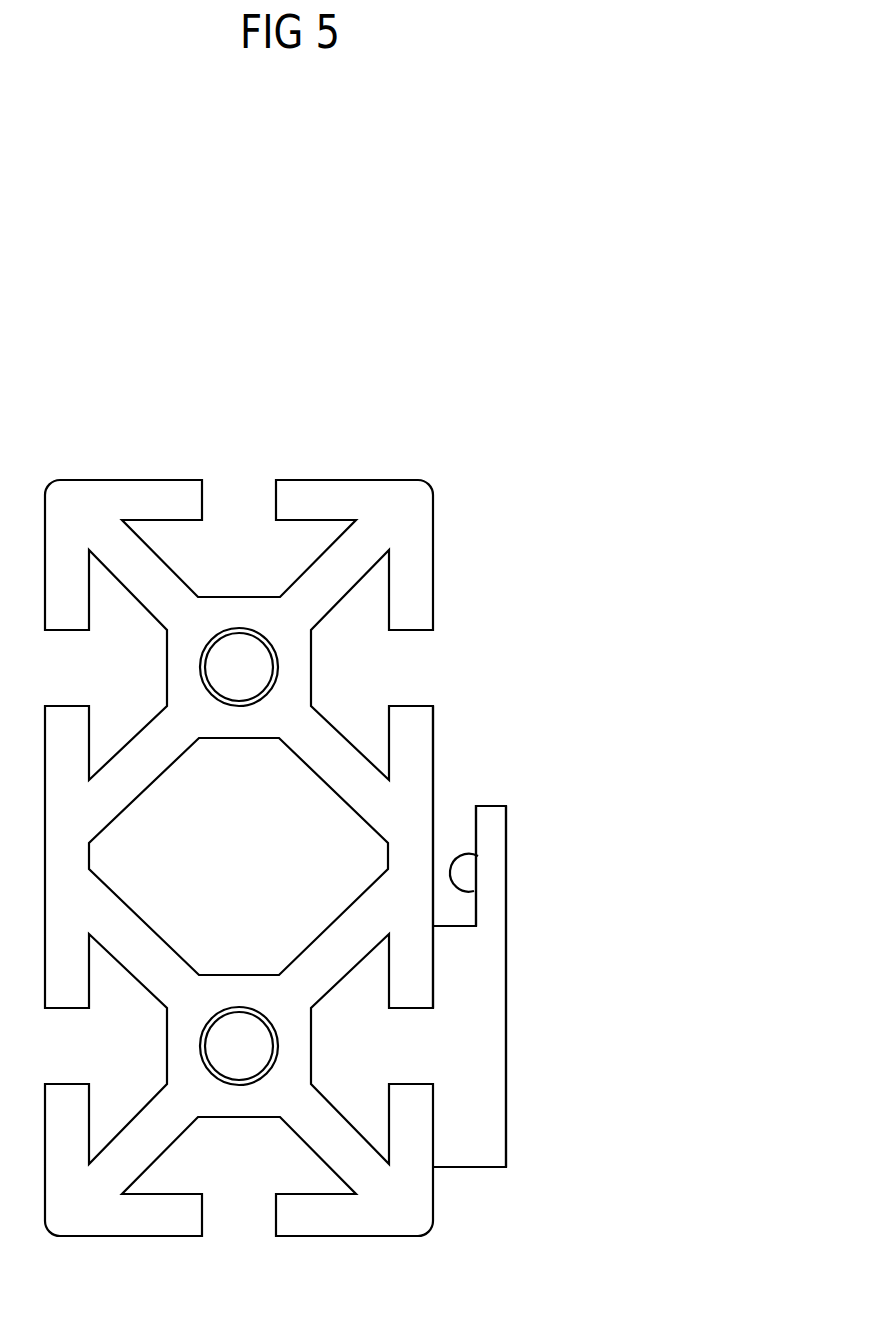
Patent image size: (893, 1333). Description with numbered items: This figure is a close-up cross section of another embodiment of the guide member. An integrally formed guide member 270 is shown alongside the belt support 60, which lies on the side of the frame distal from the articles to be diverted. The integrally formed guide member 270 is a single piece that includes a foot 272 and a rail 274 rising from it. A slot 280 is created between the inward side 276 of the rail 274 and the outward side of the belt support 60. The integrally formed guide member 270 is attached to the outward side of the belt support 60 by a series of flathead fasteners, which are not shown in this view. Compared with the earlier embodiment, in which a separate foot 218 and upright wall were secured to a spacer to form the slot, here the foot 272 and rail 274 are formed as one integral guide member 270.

The belt support 60 is at (447, 582).
The integrally formed guide member 270 is at (618, 1047).
The foot 272 is at (477, 1170).
The rail 274 is at (477, 803).
The inward side of rail 276 is at (474, 891).
The slot 280 is at (447, 808).
The foot 218 is at (532, 855).